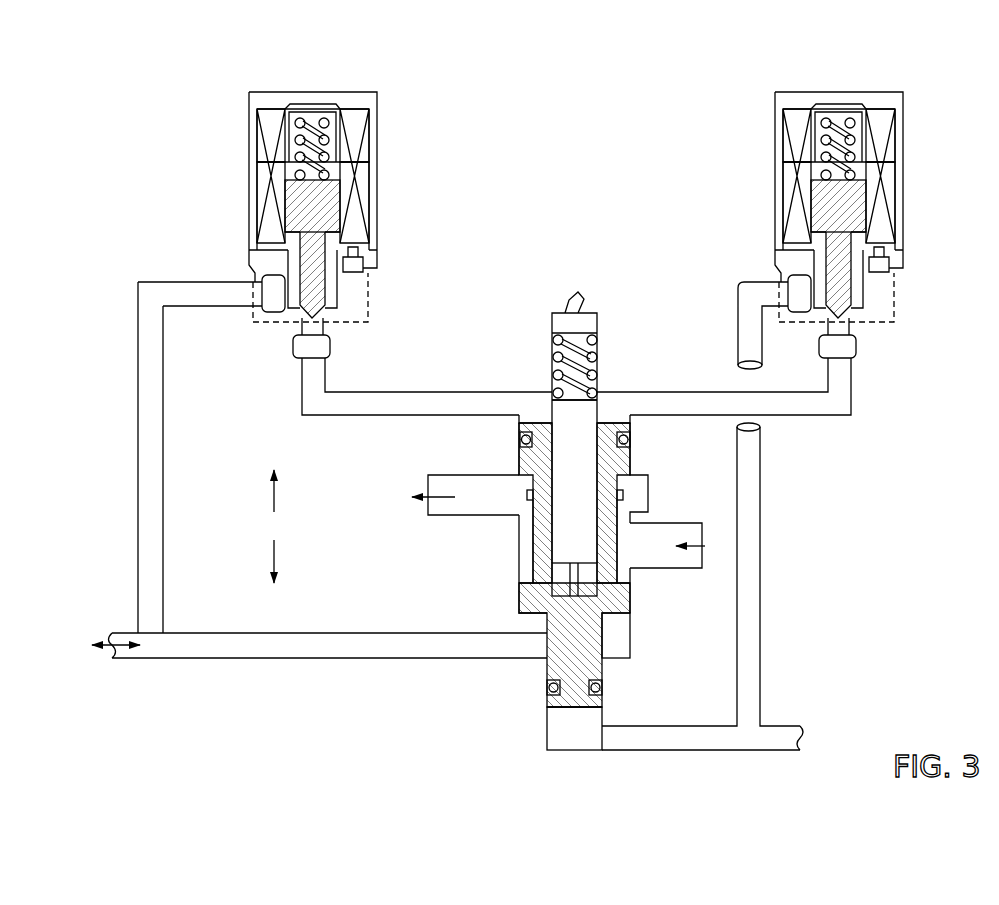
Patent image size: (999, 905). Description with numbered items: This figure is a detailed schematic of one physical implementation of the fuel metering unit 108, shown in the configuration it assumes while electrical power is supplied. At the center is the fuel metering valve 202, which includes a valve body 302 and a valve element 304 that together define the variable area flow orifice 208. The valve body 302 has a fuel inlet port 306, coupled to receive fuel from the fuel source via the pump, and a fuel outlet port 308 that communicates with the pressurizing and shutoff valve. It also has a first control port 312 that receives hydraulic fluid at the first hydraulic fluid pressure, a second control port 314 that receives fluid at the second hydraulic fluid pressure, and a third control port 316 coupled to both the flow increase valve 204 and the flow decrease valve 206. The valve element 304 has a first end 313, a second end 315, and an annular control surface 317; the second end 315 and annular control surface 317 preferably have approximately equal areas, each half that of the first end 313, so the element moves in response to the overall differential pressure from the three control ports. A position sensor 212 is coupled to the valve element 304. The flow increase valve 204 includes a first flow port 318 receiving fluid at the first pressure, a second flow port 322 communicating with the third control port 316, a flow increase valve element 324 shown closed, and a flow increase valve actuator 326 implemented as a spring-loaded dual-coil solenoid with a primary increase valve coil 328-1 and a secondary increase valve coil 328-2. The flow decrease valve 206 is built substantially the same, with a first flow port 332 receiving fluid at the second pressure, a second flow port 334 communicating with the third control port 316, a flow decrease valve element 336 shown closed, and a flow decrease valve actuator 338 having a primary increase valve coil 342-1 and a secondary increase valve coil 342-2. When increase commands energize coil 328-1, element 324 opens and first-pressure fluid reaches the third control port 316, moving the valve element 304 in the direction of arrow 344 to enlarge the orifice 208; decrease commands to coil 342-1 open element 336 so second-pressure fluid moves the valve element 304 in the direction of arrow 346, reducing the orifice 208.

The fuel metering unit 108 is at (116, 106).
The fuel metering valve 202 is at (482, 372).
The flow increase valve 204 is at (841, 197).
The flow decrease valve 206 is at (384, 97).
The variable area flow orifice 208 is at (527, 503).
The position sensor 212 is at (597, 333).
The valve body 302 is at (519, 553).
The valve element 304 is at (628, 468).
The fuel inlet port 306 is at (622, 557).
The fuel outlet port 308 is at (440, 483).
The first control port 312 is at (585, 743).
The first end 313 is at (530, 418).
The second control port 314 is at (535, 642).
The second end 315 is at (583, 707).
The third control port 316 is at (640, 413).
The annular control surface 317 is at (620, 615).
The first flow port 318 is at (773, 305).
The second flow port 322 is at (867, 342).
The flow increase valve element 324 is at (877, 257).
The flow increase valve actuator 326 is at (808, 187).
The primary increase valve coil 328-1 is at (876, 176).
The secondary increase valve coil 328-2 is at (876, 202).
The first flow port 332 is at (237, 293).
The second flow port 334 is at (318, 334).
The flow decrease valve element 336 is at (318, 296).
The flow decrease valve actuator 338 is at (250, 180).
The primary increase valve coil 342-1 is at (368, 148).
The secondary increase valve coil 342-2 is at (366, 210).
The arrow 344 is at (274, 497).
The arrow 346 is at (274, 557).